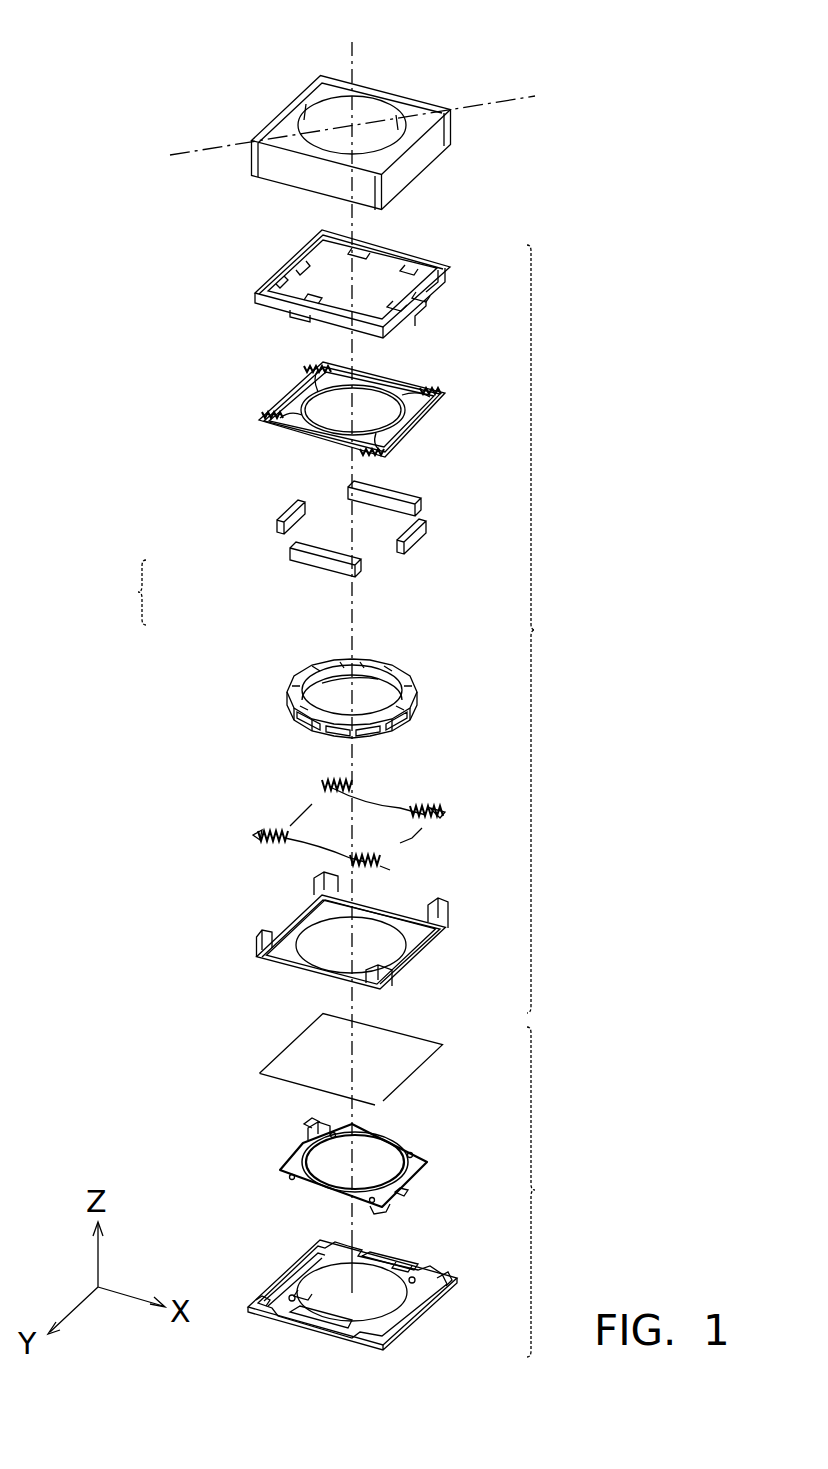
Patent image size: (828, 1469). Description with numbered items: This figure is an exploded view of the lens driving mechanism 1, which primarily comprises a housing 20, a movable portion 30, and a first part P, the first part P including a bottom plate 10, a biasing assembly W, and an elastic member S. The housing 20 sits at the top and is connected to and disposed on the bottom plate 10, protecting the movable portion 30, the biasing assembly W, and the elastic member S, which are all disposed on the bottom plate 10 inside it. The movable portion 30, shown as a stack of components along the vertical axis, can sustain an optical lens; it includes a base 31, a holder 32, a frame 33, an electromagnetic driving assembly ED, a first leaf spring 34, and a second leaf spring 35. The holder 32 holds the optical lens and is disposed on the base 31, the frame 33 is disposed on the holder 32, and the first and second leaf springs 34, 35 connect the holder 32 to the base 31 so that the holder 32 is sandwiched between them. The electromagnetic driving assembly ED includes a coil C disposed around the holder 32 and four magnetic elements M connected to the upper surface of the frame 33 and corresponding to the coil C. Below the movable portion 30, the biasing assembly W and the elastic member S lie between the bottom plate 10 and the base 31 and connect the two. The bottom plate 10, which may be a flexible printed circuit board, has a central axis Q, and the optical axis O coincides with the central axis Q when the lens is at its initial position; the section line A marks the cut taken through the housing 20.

The lens driving mechanism 1 is at (106, 41).
The bottom plate 10 is at (428, 1305).
The housing 20 is at (423, 161).
The movable portion 30 is at (334, 623).
The base 31 is at (420, 958).
The holder 32 is at (372, 680).
The frame 33 is at (425, 297).
The first leaf spring 34 is at (425, 421).
The second leaf spring 35 is at (412, 838).
The magnetic elements M is at (430, 545).
The coil C is at (385, 729).
The electromagnetic driving assembly ED is at (297, 632).
The biasing assembly W is at (420, 1071).
The elastic member S is at (417, 1178).
The first part P is at (404, 1187).
The section line A- A is at (184, 150).
The optical axis O is at (355, 650).
The central axis Q is at (355, 650).